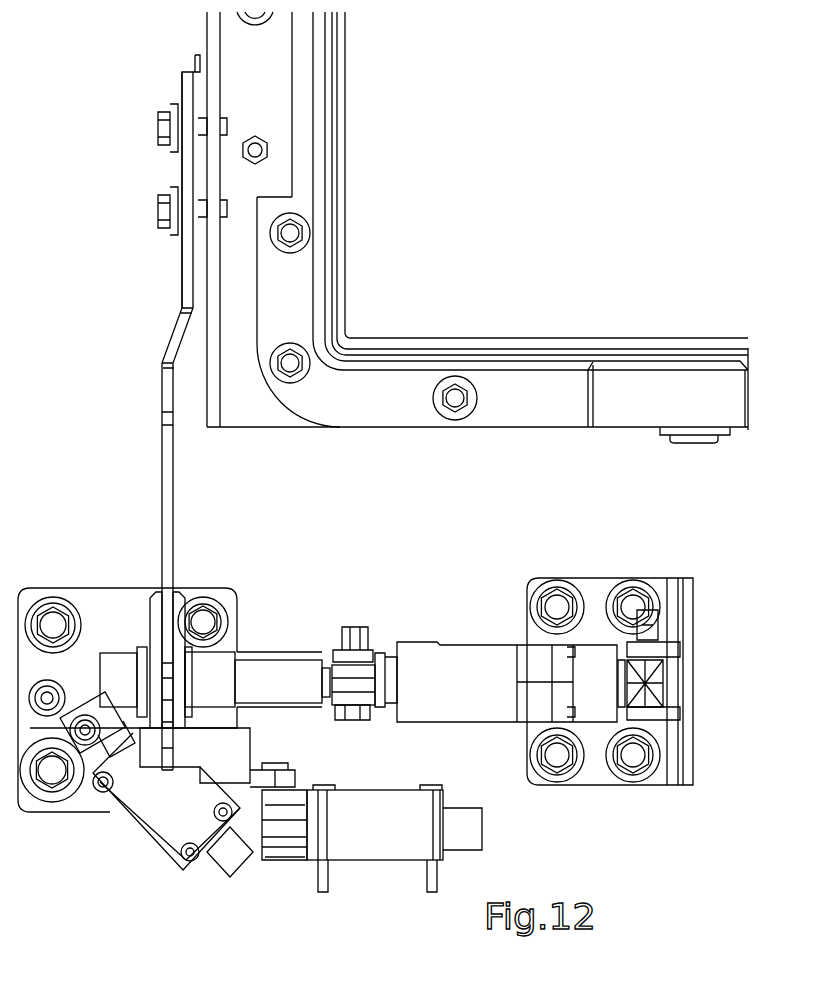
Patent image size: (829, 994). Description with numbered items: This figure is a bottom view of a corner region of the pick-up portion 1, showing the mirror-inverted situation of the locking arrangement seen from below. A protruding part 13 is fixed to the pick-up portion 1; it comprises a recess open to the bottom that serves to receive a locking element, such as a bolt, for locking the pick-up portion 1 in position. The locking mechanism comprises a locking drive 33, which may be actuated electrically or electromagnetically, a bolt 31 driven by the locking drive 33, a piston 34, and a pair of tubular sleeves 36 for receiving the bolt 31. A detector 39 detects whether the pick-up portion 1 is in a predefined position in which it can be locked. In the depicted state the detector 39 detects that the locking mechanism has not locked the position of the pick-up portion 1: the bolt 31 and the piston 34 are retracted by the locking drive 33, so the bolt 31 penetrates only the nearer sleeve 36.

The pick-up portion 1 is at (412, 427).
The protruding part 13 is at (174, 515).
The bolt 31 is at (281, 657).
The locking drive 33 is at (436, 642).
The piston 34 is at (392, 652).
The tubular sleeves 36 is at (120, 663).
The detector 39 is at (143, 837).